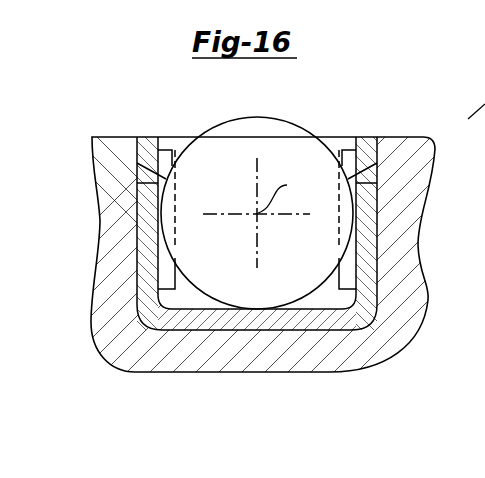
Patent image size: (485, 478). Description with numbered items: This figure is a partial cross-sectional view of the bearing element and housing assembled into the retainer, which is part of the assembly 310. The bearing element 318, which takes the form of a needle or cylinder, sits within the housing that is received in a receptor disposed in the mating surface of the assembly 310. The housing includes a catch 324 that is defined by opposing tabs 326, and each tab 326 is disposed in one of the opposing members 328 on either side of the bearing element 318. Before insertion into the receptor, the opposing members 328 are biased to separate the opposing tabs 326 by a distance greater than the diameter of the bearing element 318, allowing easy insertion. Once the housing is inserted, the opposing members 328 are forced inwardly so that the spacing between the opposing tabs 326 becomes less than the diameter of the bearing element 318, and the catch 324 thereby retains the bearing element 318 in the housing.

The assembly 310 is at (106, 120).
The bearing element 318 is at (247, 168).
The catch 324 is at (338, 143).
The opposing tabs 326 is at (169, 137).
The opposing members 328 is at (143, 233).